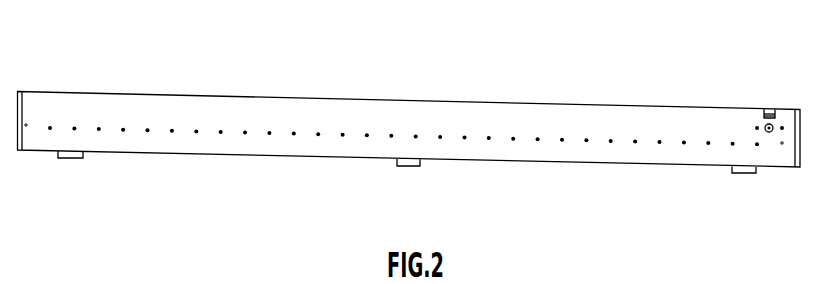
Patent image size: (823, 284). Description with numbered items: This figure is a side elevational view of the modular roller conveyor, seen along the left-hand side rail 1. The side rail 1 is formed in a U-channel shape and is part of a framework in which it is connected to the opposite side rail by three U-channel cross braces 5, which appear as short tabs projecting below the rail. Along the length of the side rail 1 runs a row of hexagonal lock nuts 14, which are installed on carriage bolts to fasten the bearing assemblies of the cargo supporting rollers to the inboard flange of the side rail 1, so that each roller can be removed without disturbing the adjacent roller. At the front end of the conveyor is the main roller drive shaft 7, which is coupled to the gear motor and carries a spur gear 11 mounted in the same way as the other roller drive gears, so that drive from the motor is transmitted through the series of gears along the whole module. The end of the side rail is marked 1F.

The left-hand side rail 1 is at (62, 91).
The end face of housing 1F is at (18, 150).
The hexagonal lock nuts 14 is at (344, 132).
The U-channel cross braces 5 is at (83, 158).
The main roller drive shaft 7 is at (766, 125).
The spur gear 11 is at (770, 113).